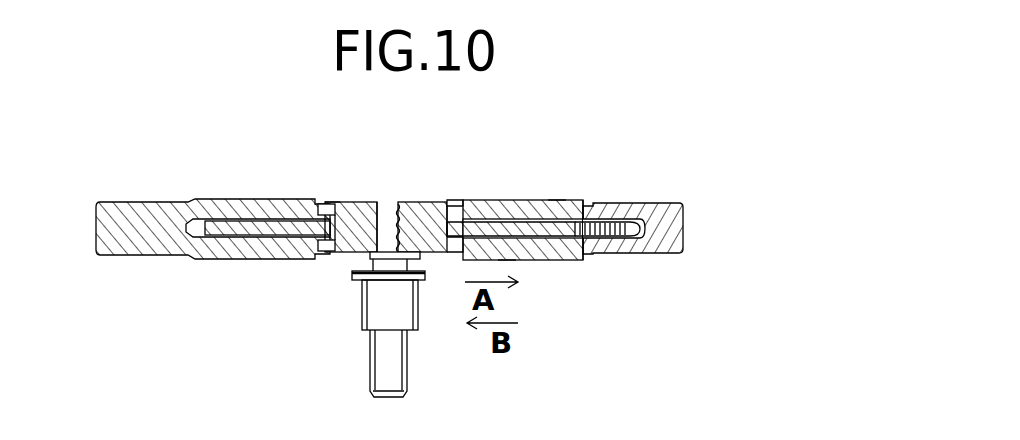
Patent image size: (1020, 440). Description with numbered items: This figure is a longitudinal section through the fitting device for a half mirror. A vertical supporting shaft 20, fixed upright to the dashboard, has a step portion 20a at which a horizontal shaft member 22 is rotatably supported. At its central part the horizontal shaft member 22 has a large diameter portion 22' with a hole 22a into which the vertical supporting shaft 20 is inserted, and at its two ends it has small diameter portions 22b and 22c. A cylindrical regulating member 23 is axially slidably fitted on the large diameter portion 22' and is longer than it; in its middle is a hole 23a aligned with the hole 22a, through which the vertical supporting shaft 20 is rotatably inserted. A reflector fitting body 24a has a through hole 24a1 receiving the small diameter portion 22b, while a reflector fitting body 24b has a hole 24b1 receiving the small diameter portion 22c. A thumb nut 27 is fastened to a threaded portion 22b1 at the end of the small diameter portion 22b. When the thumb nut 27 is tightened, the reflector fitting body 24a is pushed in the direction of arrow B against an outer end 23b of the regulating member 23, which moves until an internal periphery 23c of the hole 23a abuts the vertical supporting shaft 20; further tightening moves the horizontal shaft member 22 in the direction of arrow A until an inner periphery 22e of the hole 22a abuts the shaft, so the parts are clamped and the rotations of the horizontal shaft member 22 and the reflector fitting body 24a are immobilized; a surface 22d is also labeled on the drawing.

The vertical supporting shaft 20 is at (398, 203).
The step portion 20a is at (370, 258).
The horizontal shaft member 22 is at (471, 199).
The large diameter portion 22' is at (348, 152).
The hole 22a is at (448, 203).
The small diameter portion 22b is at (597, 205).
The threaded portion 22b1 is at (636, 205).
The small diameter portion 22c is at (244, 200).
The lower surface of right body 22d is at (507, 259).
The inner periphery 22e is at (415, 256).
The cylindrical regulating member 23 is at (353, 201).
The hole 23a is at (374, 201).
The outer end 23b is at (557, 202).
The internal periphery 23c is at (385, 258).
The reflector fitting body 24a is at (583, 260).
The through hole 24a1 is at (583, 205).
The reflector fitting body 24b is at (210, 200).
The hole 24b1 is at (231, 229).
The thumb nut 27 is at (683, 231).